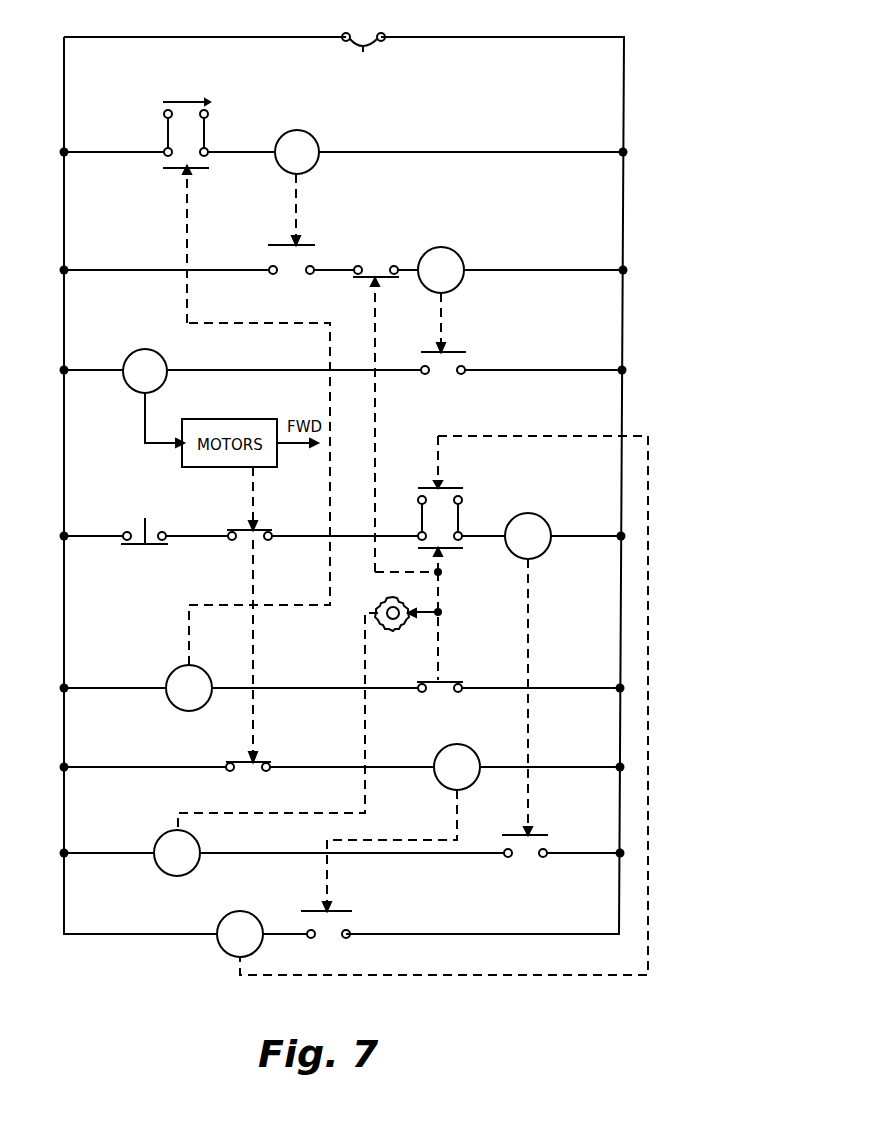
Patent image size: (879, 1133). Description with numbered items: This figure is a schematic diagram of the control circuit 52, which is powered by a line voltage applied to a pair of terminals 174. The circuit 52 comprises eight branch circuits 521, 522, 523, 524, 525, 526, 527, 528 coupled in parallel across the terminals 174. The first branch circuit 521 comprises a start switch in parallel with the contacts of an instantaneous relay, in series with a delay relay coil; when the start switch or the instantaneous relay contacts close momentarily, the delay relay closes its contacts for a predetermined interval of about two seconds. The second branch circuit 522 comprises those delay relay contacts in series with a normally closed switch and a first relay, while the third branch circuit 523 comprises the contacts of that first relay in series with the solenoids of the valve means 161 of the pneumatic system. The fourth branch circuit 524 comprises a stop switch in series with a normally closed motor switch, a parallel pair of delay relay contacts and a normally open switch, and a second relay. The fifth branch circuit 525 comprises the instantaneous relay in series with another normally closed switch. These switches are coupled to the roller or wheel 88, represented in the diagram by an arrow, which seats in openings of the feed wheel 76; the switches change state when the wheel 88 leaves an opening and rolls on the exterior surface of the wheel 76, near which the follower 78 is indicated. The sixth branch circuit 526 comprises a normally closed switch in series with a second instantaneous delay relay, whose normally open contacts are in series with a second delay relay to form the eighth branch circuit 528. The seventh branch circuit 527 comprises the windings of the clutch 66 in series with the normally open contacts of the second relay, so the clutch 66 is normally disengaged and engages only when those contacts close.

The circuit 52 is at (648, 313).
The terminals 174 is at (363, 50).
The valve means 161 is at (150, 352).
The feed wheel 76 is at (378, 600).
The follower 78 is at (397, 627).
The wheel 88 is at (418, 619).
The clutch 66 is at (160, 842).
The branch circuit 52₁ 521 is at (549, 150).
The branch circuit 52₂ 522 is at (556, 270).
The branch circuit 52₃ 523 is at (556, 370).
The branch circuit 52₄ 524 is at (577, 536).
The branch circuit 52₅ 525 is at (573, 688).
The branch circuit 52₆ 526 is at (573, 767).
The branch circuit 52₇ 527 is at (578, 853).
The branch circuit 52₈ 528 is at (578, 934).